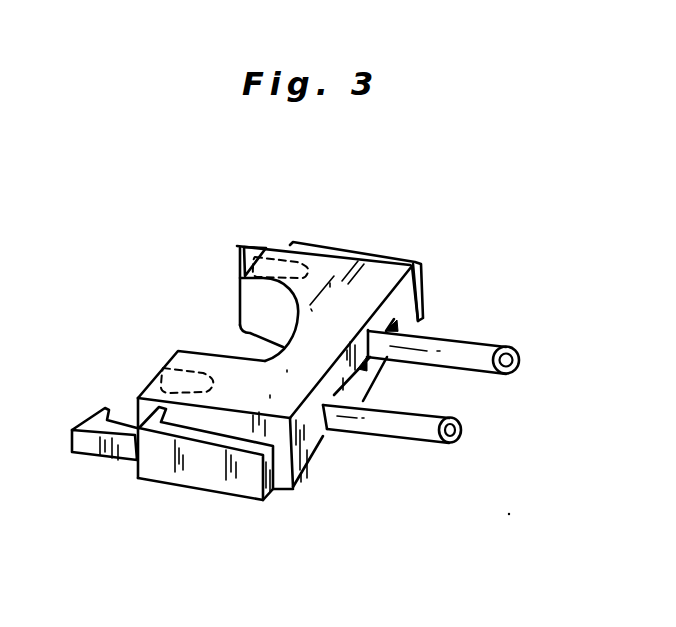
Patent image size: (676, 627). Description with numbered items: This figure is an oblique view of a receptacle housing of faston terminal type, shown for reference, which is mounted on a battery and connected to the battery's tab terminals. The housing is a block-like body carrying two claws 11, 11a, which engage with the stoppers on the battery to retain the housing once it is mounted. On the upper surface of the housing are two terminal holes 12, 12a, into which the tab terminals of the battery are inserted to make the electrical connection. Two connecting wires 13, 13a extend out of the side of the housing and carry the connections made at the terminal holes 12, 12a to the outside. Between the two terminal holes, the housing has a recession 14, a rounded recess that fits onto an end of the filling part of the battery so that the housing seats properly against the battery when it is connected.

The claw 11 is at (236, 251).
The claw 11a is at (85, 445).
The terminal hole 12 is at (272, 256).
The terminal hole 12a is at (164, 366).
The connecting wire 13 is at (461, 338).
The connecting wire 13a is at (403, 425).
The recession 14 is at (247, 343).